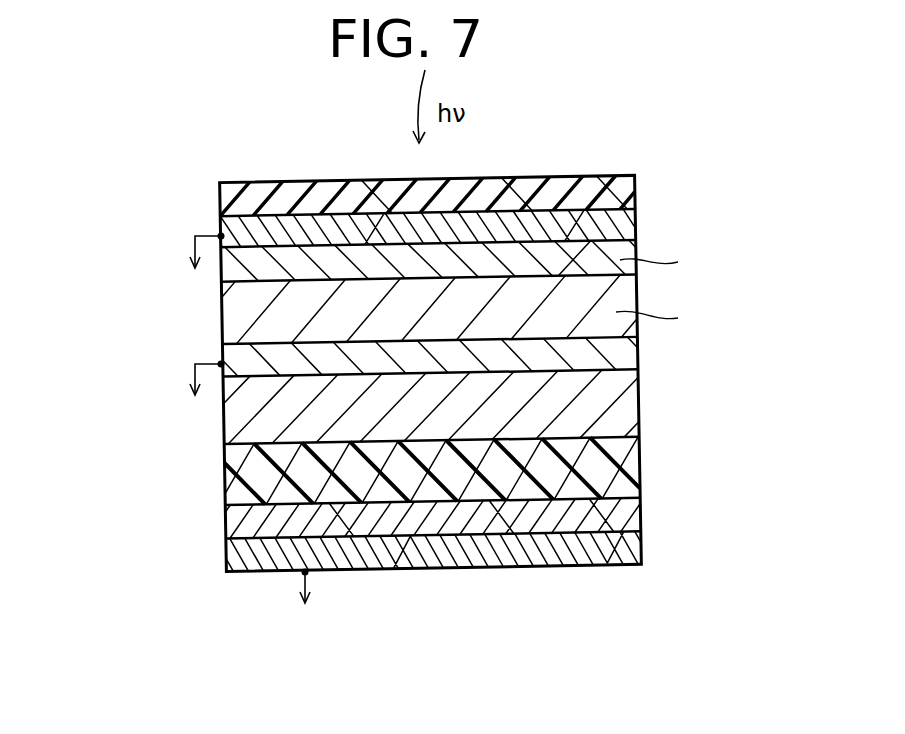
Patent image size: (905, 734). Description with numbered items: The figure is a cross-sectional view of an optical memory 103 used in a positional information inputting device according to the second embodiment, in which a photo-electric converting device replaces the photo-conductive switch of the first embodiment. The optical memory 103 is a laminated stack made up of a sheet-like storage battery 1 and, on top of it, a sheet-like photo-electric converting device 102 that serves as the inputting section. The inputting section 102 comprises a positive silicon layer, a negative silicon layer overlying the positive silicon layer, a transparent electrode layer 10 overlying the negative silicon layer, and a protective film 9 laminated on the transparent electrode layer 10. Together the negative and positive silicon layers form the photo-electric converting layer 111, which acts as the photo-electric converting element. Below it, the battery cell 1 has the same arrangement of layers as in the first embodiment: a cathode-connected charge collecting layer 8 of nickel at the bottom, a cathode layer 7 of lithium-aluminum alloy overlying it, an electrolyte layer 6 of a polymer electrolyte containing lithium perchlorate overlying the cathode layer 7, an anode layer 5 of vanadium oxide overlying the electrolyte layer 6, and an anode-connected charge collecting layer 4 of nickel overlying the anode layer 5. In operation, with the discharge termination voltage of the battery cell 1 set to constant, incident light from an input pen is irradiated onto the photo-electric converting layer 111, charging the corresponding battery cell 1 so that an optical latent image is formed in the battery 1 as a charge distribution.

The protective film 9 is at (618, 190).
The transparent electrode layer 10 is at (620, 227).
The photo-electric converting layer 111 is at (745, 238).
The sheet-like photo-electric converting device 102 is at (459, 261).
The optical memory 103 is at (420, 374).
The sheet-like storage battery 1 is at (416, 456).
The anode-connected charge collecting layer 4 is at (622, 355).
The anode layer 5 is at (620, 410).
The electrolyte layer 6 is at (622, 470).
The cathode layer 7 is at (620, 515).
The cathode-connected charge collecting layer 8 is at (628, 551).